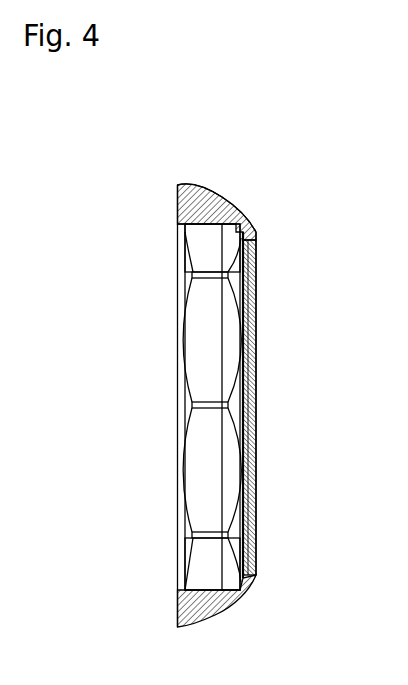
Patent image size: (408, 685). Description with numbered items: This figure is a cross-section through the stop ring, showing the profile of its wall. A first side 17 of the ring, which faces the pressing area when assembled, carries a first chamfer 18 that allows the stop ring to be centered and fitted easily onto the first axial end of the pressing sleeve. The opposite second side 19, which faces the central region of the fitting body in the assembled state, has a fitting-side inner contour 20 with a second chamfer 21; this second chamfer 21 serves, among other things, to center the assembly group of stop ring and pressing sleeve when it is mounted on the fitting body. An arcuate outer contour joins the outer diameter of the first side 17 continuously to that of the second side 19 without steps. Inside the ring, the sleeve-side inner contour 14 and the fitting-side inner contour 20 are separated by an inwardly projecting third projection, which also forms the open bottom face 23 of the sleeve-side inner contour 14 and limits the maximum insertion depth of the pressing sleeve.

The sleeve-side inner contour 14 is at (149, 490).
The first side 17 is at (169, 184).
The first chamfer 18 is at (184, 221).
The second side 19 is at (266, 256).
The fitting-side inner contour 20 is at (222, 197).
The second chamfer 21 is at (250, 572).
The open bottom face 23 is at (240, 227).